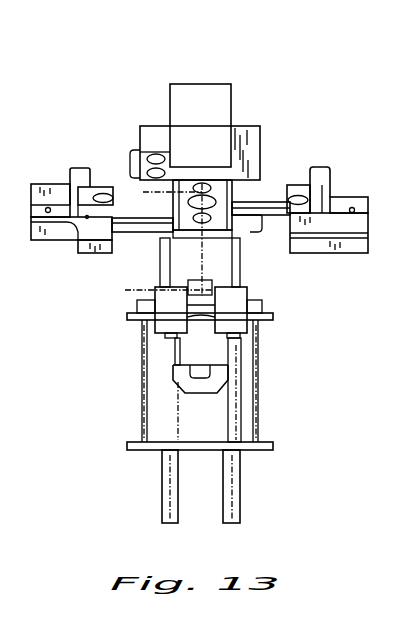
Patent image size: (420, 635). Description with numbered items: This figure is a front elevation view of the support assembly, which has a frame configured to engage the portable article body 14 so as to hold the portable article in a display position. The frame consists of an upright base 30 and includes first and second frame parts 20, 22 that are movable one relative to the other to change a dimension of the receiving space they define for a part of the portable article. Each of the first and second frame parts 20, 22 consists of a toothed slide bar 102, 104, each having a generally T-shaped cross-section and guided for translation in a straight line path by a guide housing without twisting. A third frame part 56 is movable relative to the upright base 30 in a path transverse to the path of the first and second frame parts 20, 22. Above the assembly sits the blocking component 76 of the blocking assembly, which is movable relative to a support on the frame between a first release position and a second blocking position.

The portable article body 14 is at (142, 192).
The first frame part 20 is at (64, 175).
The second frame part 22 is at (337, 178).
The upright base 30 is at (243, 373).
The third frame part 56 is at (167, 337).
The blocking component 76 is at (195, 105).
The toothed slide bar 102 is at (130, 223).
The toothed slide bar 104 is at (265, 206).